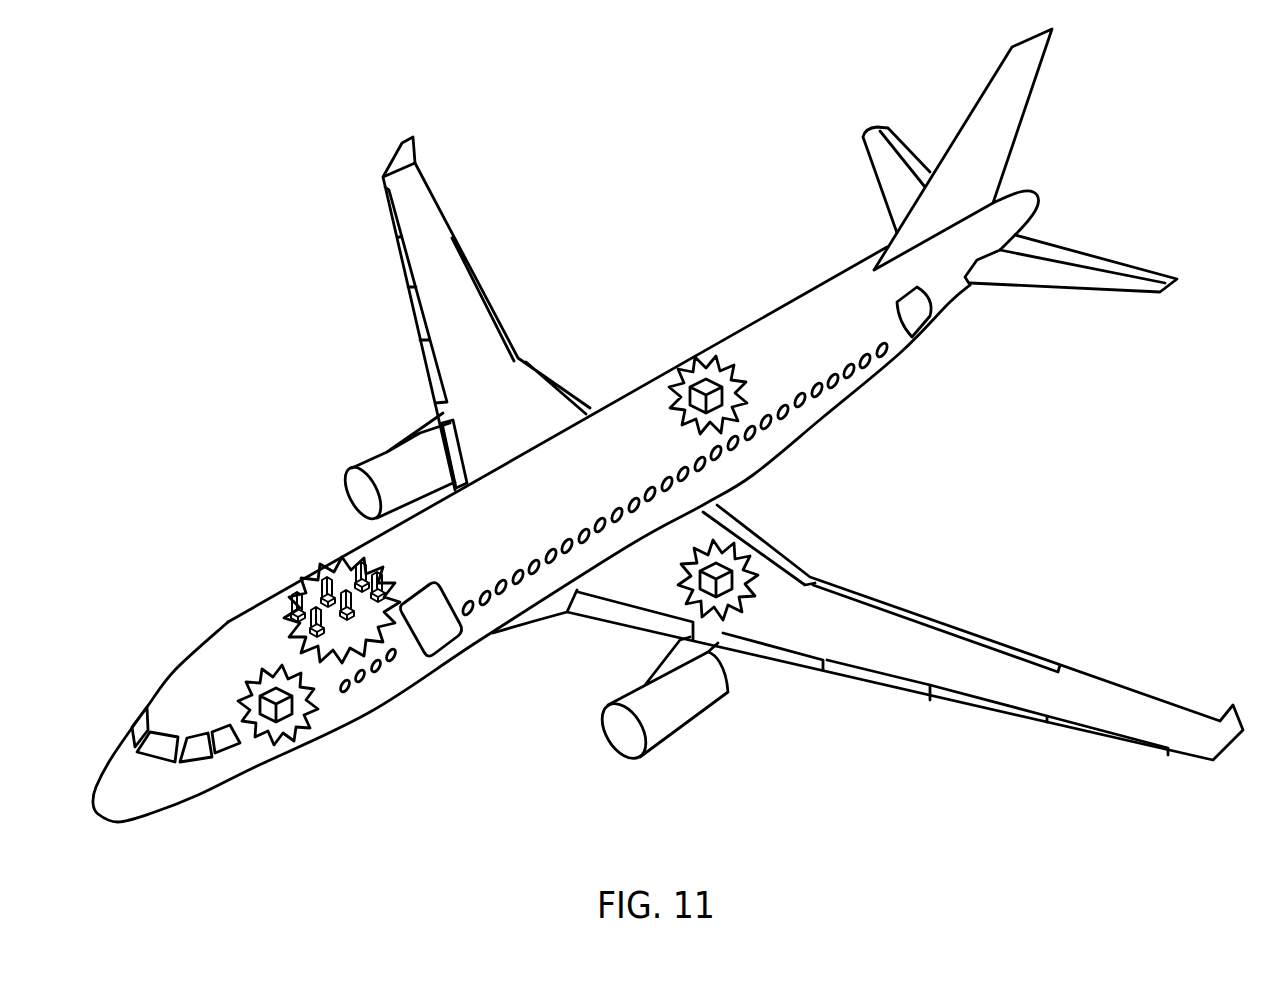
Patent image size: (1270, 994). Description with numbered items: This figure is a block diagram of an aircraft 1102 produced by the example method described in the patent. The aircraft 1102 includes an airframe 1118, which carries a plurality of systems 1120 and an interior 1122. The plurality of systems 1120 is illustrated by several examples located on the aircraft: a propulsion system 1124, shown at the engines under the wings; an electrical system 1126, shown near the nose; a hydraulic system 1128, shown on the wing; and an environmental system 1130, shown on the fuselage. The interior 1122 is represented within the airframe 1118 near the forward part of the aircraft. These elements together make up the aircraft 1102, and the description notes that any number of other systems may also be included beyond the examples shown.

The aircraft 1102 is at (213, 378).
The airframe 1118 is at (310, 562).
The plurality of systems 1120 is at (983, 530).
The interior 1122 is at (295, 620).
The propulsion system 1124 is at (368, 460).
The electrical system 1126 is at (273, 690).
The hydraulic system 1128 is at (727, 587).
The environmental system 1130 is at (707, 380).